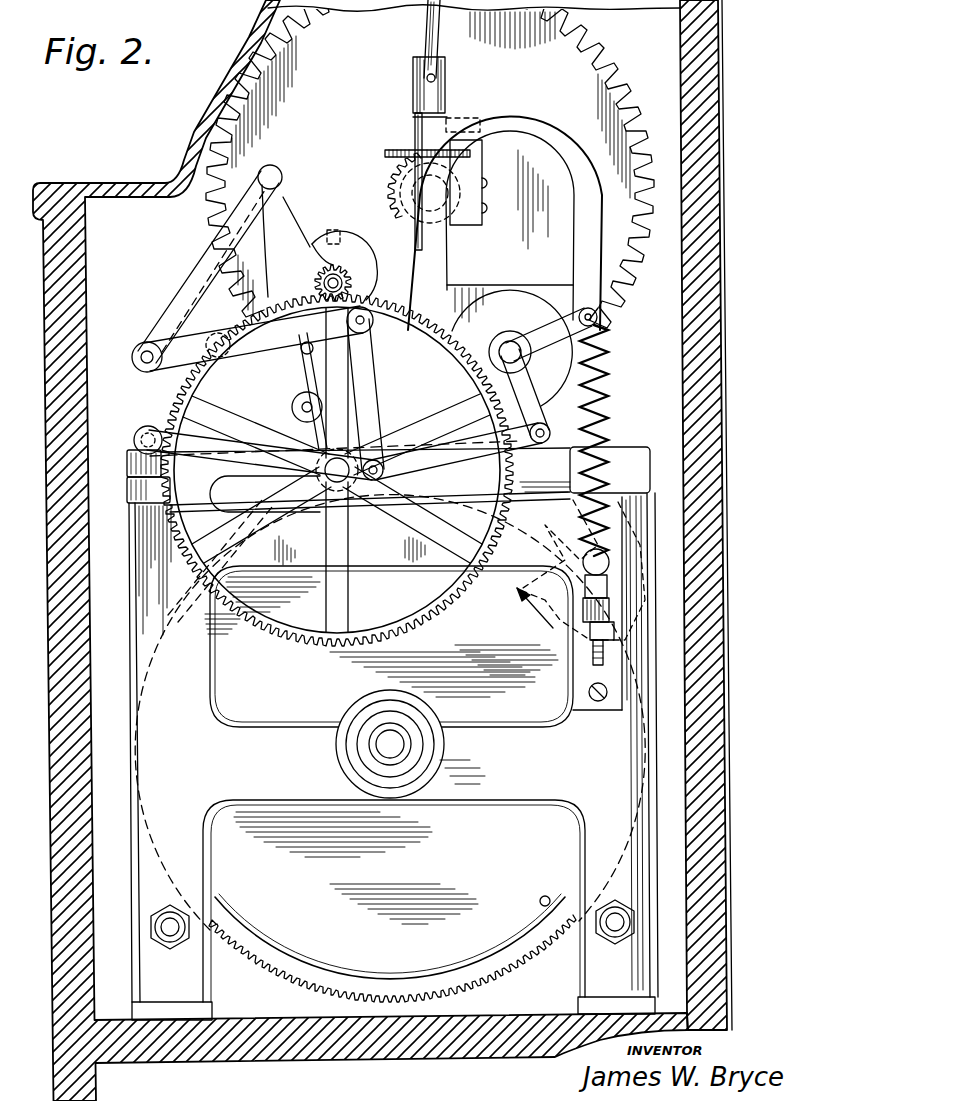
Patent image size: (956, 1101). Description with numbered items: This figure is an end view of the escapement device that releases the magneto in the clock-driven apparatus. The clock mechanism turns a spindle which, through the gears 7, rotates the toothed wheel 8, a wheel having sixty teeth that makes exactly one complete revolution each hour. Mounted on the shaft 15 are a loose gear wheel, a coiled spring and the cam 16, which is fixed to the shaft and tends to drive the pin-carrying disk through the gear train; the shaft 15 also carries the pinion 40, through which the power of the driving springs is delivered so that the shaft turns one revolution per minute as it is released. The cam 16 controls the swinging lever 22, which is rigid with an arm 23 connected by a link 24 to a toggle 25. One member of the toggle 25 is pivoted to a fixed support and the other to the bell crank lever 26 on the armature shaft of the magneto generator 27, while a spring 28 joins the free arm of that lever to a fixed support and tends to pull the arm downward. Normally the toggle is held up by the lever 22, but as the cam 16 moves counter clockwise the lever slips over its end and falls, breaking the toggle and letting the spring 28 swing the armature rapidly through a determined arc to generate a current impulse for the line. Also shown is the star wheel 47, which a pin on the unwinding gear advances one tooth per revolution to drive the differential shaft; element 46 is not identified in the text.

The gears 7 is at (398, 160).
The toothed wheel 8 is at (612, 63).
The shaft 15 is at (322, 285).
The cam 16 is at (285, 235).
The swinging lever 22 is at (200, 278).
The arm 23 is at (265, 345).
The link 24 is at (366, 385).
The toggle 25 is at (338, 522).
The bell crank lever 26 is at (543, 375).
The magneto generator 27 is at (506, 300).
The spring 28 is at (604, 408).
The pinion 40 is at (340, 273).
The gear 46 is at (540, 898).
The star wheel 47 is at (612, 538).